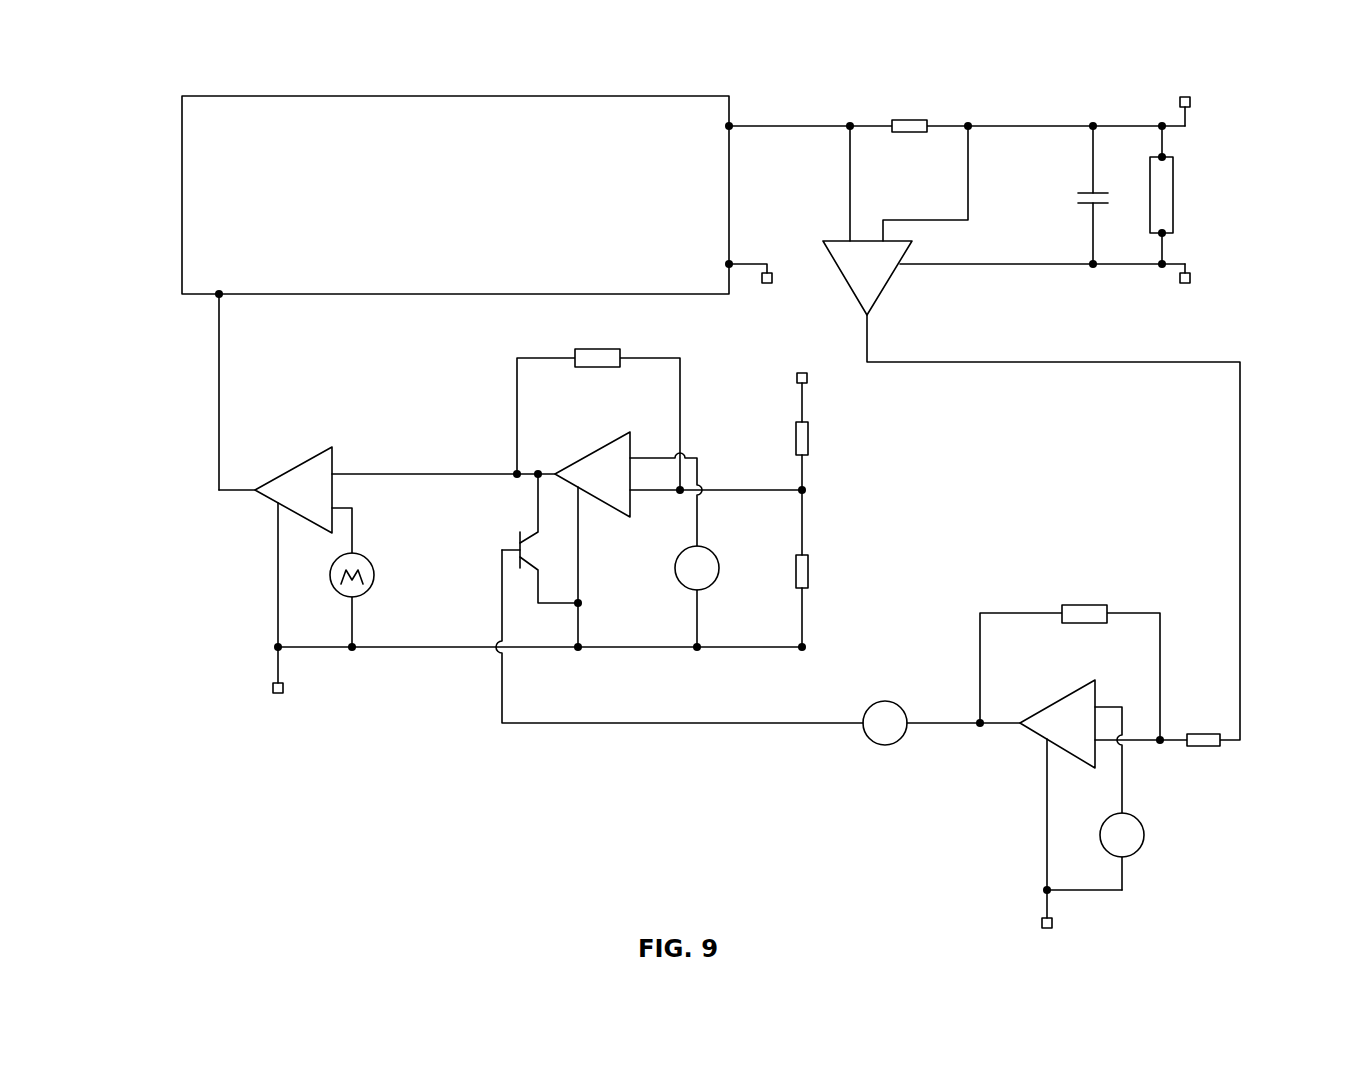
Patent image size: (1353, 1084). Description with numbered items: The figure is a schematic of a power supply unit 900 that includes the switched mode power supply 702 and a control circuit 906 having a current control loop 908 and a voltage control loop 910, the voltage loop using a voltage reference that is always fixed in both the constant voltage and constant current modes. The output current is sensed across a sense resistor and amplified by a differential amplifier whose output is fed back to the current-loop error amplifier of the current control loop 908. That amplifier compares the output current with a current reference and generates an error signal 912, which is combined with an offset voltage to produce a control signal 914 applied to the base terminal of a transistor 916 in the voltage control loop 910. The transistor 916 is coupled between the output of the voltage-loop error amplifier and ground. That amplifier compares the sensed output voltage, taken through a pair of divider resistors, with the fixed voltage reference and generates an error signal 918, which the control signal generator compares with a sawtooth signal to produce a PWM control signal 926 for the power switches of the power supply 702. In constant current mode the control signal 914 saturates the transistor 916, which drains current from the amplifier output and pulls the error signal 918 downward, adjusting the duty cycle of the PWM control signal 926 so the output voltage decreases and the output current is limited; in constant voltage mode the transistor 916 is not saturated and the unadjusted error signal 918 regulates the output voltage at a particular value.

The power supply unit 900 is at (168, 72).
The switched mode power supply 702 is at (678, 96).
The control circuit 906 is at (1250, 300).
The current control loop 908 is at (924, 810).
The voltage control loop 910 is at (472, 416).
The error signal 912 is at (945, 730).
The control signal 914 is at (545, 730).
The transistor 916 is at (484, 570).
The error signal 918 is at (397, 467).
The PWM control signal 926 is at (226, 361).